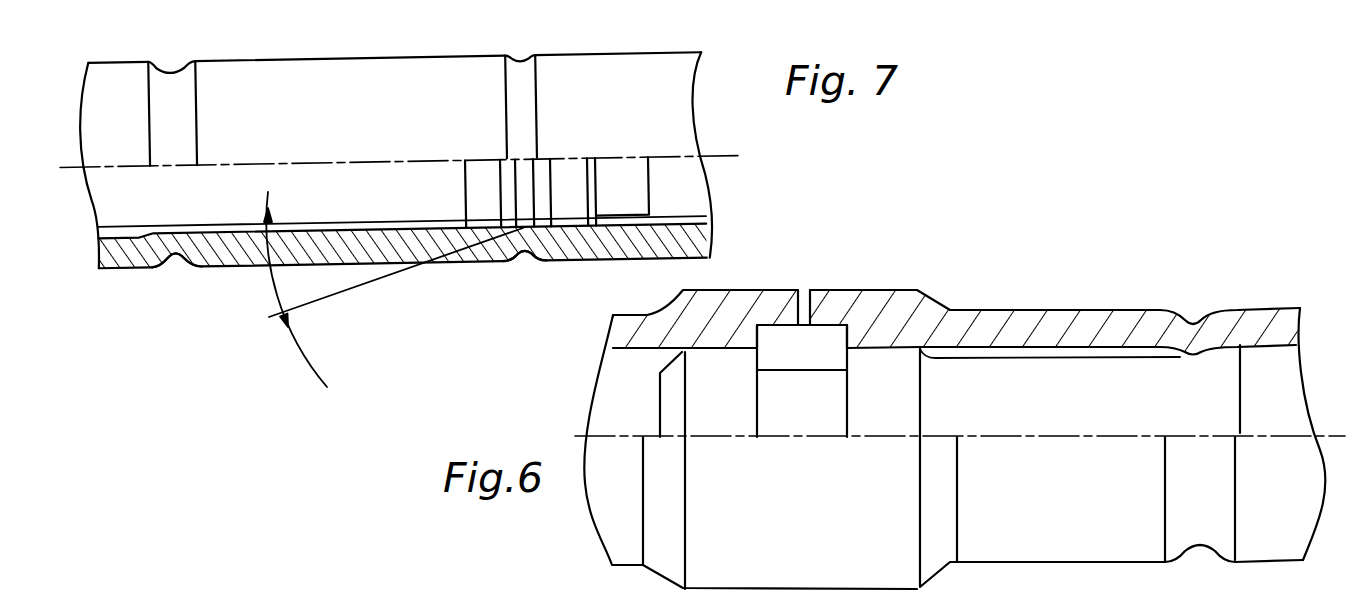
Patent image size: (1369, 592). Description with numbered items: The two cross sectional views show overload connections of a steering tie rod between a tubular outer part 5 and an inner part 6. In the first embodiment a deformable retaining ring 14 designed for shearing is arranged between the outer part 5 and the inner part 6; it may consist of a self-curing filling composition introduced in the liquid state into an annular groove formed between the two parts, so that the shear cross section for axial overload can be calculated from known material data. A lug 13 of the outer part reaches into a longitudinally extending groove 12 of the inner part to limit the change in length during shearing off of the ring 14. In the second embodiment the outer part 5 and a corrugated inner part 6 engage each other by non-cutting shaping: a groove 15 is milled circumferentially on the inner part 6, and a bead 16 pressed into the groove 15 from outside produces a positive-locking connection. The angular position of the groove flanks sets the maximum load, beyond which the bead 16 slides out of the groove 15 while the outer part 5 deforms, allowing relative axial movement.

In FIG. 7, the outer part 5 is at (247, 266).
In FIG. 6, the outer part 5 is at (960, 325).
In FIG. 7, the inner part 6 is at (157, 192).
In FIG. 6, the inner part 6 is at (1042, 395).
In FIG. 6, the longitudinally extending groove 12 is at (1092, 587).
In FIG. 7, the lug 13 is at (180, 258).
In FIG. 6, the lug 13 is at (1305, 587).
In FIG. 6, the retaining ring 14 is at (825, 320).
In FIG. 7, the groove 15 is at (523, 182).
In FIG. 7, the bead 16 is at (520, 231).